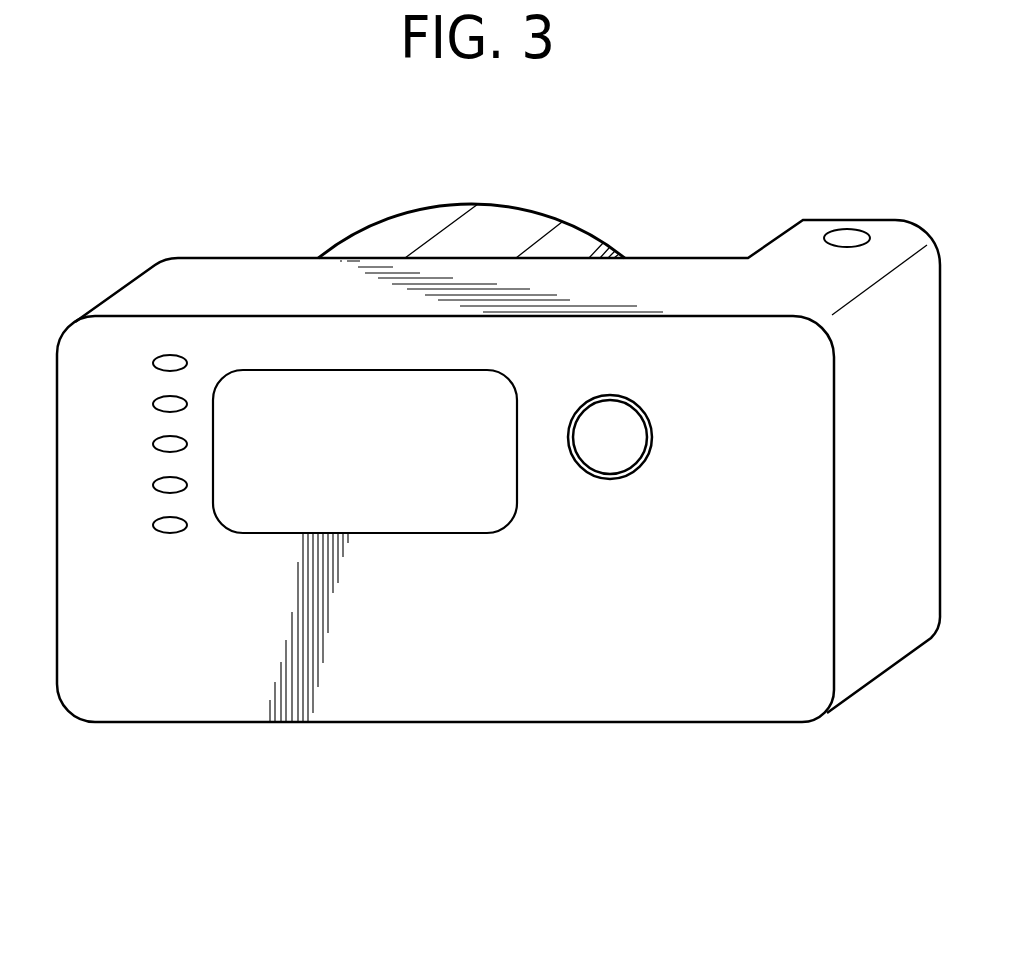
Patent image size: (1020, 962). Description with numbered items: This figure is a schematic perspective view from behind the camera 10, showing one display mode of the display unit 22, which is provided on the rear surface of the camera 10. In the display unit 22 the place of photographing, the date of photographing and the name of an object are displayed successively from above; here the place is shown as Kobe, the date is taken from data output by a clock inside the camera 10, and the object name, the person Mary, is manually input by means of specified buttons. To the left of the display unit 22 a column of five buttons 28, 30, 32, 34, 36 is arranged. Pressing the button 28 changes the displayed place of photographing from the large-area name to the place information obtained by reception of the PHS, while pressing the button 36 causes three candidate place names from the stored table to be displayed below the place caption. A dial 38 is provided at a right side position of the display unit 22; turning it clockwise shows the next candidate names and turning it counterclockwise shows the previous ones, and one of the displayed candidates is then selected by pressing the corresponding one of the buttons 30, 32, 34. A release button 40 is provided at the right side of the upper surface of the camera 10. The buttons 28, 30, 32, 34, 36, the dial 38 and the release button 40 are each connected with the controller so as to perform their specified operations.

The camera 10 is at (392, 722).
The display unit 22 is at (440, 540).
The button 28 is at (162, 359).
The button 30 is at (162, 400).
The button 32 is at (162, 440).
The button 34 is at (162, 481).
The button 36 is at (162, 521).
The dial 38 is at (640, 403).
The release button 40 is at (853, 230).